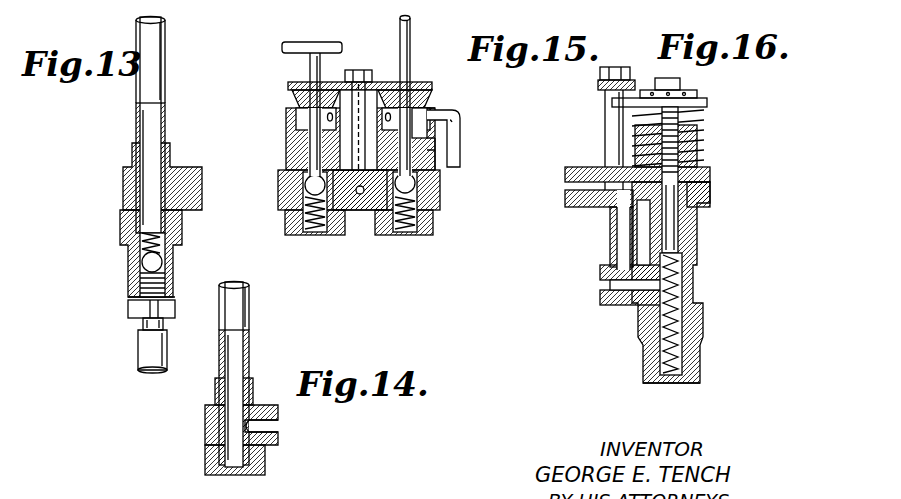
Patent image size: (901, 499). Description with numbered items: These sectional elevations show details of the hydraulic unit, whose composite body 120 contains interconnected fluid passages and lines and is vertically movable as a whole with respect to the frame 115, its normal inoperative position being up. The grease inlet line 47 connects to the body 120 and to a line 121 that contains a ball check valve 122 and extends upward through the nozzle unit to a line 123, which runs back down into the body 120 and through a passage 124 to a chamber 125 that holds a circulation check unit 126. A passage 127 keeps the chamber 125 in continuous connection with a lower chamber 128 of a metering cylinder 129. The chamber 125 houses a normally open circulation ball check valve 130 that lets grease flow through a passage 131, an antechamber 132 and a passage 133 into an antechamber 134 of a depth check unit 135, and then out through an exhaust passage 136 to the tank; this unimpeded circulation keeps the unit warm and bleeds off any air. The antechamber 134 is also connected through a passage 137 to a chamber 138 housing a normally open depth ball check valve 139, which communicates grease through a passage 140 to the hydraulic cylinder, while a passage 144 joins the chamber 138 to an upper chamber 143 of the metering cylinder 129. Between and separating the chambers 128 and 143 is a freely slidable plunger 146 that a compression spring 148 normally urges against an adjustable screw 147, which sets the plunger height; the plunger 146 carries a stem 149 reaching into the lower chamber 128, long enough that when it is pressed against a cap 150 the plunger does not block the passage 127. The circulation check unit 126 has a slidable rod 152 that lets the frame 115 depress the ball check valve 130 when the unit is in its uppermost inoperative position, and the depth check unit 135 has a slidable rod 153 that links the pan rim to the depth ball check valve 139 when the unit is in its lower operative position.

In FIG. 13, the grease inlet line 47 is at (148, 352).
In FIG. 15, the frame 115 is at (336, 42).
In FIG. 13, the composite body 120 is at (124, 187).
In FIG. 14, the composite body 120 is at (207, 420).
In FIG. 13, the line 121 is at (146, 218).
In FIG. 13, the ball check valve 122 is at (140, 263).
In FIG. 14, the line 123 is at (240, 341).
In FIG. 14, the passage 124 is at (281, 429).
In FIG. 15, the passage 124 is at (312, 232).
In FIG. 15, the chamber 125 is at (290, 205).
In FIG. 15, the circulation check unit 126 is at (286, 132).
In FIG. 16, the passage 127 is at (592, 196).
In FIG. 16, the lower chamber 128 is at (682, 305).
In FIG. 16, the metering cylinder 129 is at (722, 213).
In FIG. 15, the circulation ball check valve 130 is at (305, 183).
In FIG. 15, the passage 131 is at (308, 158).
In FIG. 15, the antechamber 132 is at (300, 113).
In FIG. 15, the passage 133 is at (330, 115).
In FIG. 15, the antechamber 134 is at (420, 110).
In FIG. 15, the depth check unit 135 is at (452, 103).
In FIG. 15, the exhaust passage 136 is at (460, 135).
In FIG. 15, the passage 137 is at (436, 150).
In FIG. 15, the chamber 138 is at (438, 192).
In FIG. 15, the depth ball check valve 139 is at (416, 183).
In FIG. 15, the passage 140 is at (376, 194).
In FIG. 16, the upper chamber 143 is at (710, 175).
In FIG. 16, the passage 144 is at (712, 193).
In FIG. 16, the plunger 146 is at (680, 238).
In FIG. 16, the adjustable screw 147 is at (700, 127).
In FIG. 16, the compression spring 148 is at (690, 350).
In FIG. 16, the stem 149 is at (682, 326).
In FIG. 16, the cap 150 is at (700, 379).
In FIG. 15, the slidable rod 152 is at (310, 61).
In FIG. 15, the slidable rod 153 is at (411, 40).